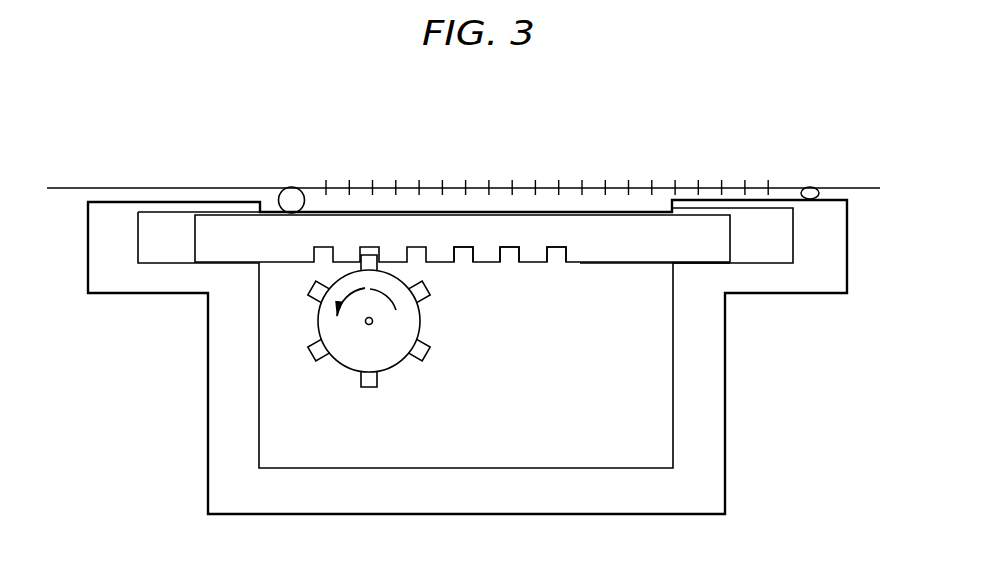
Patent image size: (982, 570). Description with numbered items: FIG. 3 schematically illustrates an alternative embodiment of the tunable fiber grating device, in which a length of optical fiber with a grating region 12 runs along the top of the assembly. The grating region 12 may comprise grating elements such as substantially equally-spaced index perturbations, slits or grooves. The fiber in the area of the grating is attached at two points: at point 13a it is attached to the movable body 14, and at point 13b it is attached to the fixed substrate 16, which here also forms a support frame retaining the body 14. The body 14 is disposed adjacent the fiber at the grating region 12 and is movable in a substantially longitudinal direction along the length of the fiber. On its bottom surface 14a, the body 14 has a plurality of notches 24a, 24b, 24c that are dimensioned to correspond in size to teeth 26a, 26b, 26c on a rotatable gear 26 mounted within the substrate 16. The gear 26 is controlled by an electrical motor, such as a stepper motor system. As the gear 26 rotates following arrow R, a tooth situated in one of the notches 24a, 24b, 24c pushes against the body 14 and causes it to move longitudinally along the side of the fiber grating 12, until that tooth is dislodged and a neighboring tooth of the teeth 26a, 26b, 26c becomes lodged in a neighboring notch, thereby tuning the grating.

The grating region 12 is at (502, 176).
The attachment point 13a is at (277, 195).
The attachment point 13b is at (812, 188).
The movable body 14 is at (412, 214).
The plate bottom surface 14a is at (604, 240).
The fixed substrate 16 is at (777, 279).
The notch 24a is at (462, 258).
The notch 24b is at (509, 258).
The notch 24c is at (556, 258).
The rotatable gear 26 is at (380, 341).
The tooth 26a is at (313, 283).
The tooth 26b is at (312, 355).
The tooth 26c is at (366, 392).
The rotation arrow R is at (372, 310).